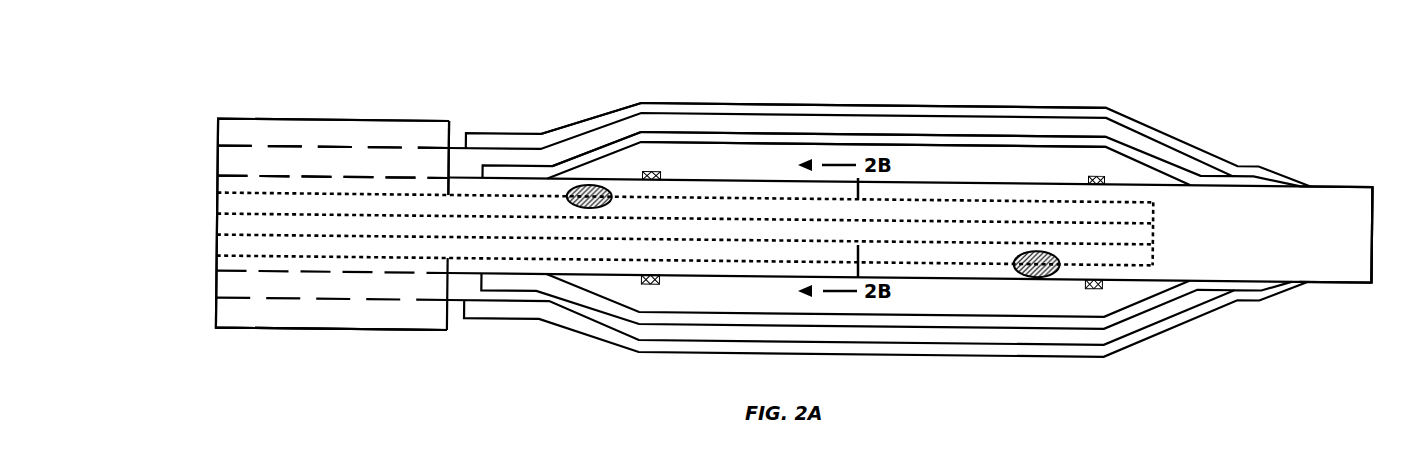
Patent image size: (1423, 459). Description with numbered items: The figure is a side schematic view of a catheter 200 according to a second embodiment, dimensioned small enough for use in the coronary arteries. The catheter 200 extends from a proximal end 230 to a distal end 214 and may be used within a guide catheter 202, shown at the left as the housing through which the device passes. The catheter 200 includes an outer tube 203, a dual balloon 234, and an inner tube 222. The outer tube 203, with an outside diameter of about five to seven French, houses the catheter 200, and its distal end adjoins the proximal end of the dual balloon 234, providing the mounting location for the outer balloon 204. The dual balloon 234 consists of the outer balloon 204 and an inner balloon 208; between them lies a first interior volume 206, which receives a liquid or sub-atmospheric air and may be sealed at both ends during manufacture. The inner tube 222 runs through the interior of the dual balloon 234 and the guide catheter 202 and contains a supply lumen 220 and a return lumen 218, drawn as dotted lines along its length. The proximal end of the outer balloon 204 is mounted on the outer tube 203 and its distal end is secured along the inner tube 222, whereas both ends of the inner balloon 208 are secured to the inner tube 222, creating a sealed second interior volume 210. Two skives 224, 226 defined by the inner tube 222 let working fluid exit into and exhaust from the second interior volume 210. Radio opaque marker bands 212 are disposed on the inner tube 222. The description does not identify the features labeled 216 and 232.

The catheter 200 is at (506, 414).
The guide catheter 202 is at (332, 118).
The outer tube 203 is at (435, 148).
The outer balloon 204 is at (708, 103).
The first interior volume 206 is at (764, 128).
The inner balloon 208 is at (863, 134).
The second interior volume 210 is at (940, 160).
The radio opaque marker bands 212 is at (1093, 177).
The distal end 214 is at (1399, 221).
The first wire 216 is at (215, 195).
The return lumen 218 is at (215, 158).
The supply lumen 220 is at (215, 249).
The inner tube 222 is at (984, 183).
The skive 224 is at (1037, 279).
The skive 226 is at (588, 185).
The proximal end 230 is at (168, 272).
The transition region 232 is at (603, 146).
The dual balloon 234 is at (951, 98).